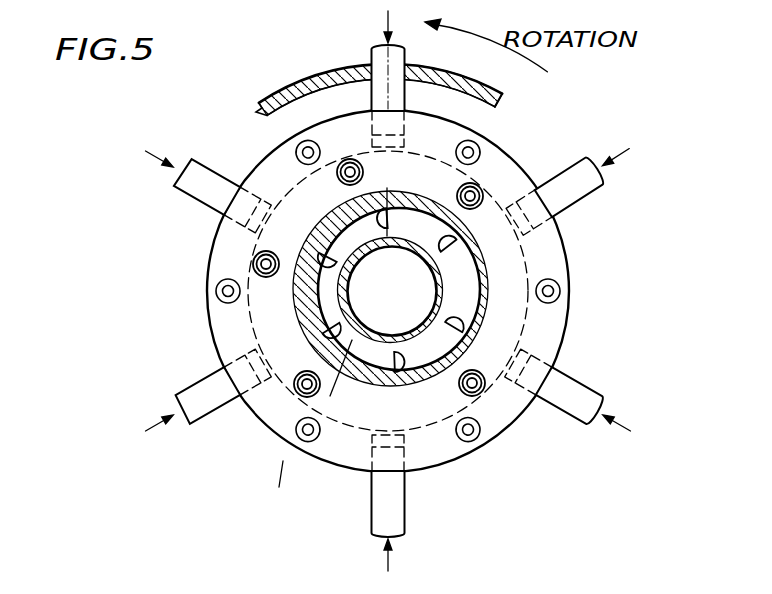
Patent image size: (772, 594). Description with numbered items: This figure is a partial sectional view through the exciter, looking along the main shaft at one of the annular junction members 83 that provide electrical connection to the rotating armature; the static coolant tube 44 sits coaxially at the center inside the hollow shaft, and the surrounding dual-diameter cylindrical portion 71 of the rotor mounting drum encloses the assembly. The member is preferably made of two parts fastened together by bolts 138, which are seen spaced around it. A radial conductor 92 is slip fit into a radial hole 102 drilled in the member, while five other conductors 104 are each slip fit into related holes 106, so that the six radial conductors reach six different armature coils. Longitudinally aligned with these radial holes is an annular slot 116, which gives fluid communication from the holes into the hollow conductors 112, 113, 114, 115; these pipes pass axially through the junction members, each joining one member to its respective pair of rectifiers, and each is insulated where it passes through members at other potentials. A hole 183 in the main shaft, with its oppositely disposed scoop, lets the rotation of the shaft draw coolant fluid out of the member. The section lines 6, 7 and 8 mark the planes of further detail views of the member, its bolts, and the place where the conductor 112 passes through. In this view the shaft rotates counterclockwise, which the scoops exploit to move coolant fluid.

The section line 6- 6 is at (379, 233).
The section line 7- 7 is at (364, 351).
The section line 8- 8 is at (425, 235).
The tube 44 is at (390, 288).
The cylindrical portion of rotor mounting drum 71 is at (494, 90).
The annular junction member 83 is at (582, 272).
The conductor 92 is at (407, 58).
The radial hole 102 is at (407, 114).
The conductors 104 is at (178, 184).
The holes 106 is at (262, 191).
The hollow conductor 112 is at (457, 192).
The hollow conductor 113 is at (484, 394).
The hollow conductor 114 is at (296, 393).
The hollow conductor 115 is at (352, 158).
The annular slot 116 is at (540, 250).
The bolts 138 is at (216, 290).
The hole in main shaft 183 is at (350, 197).